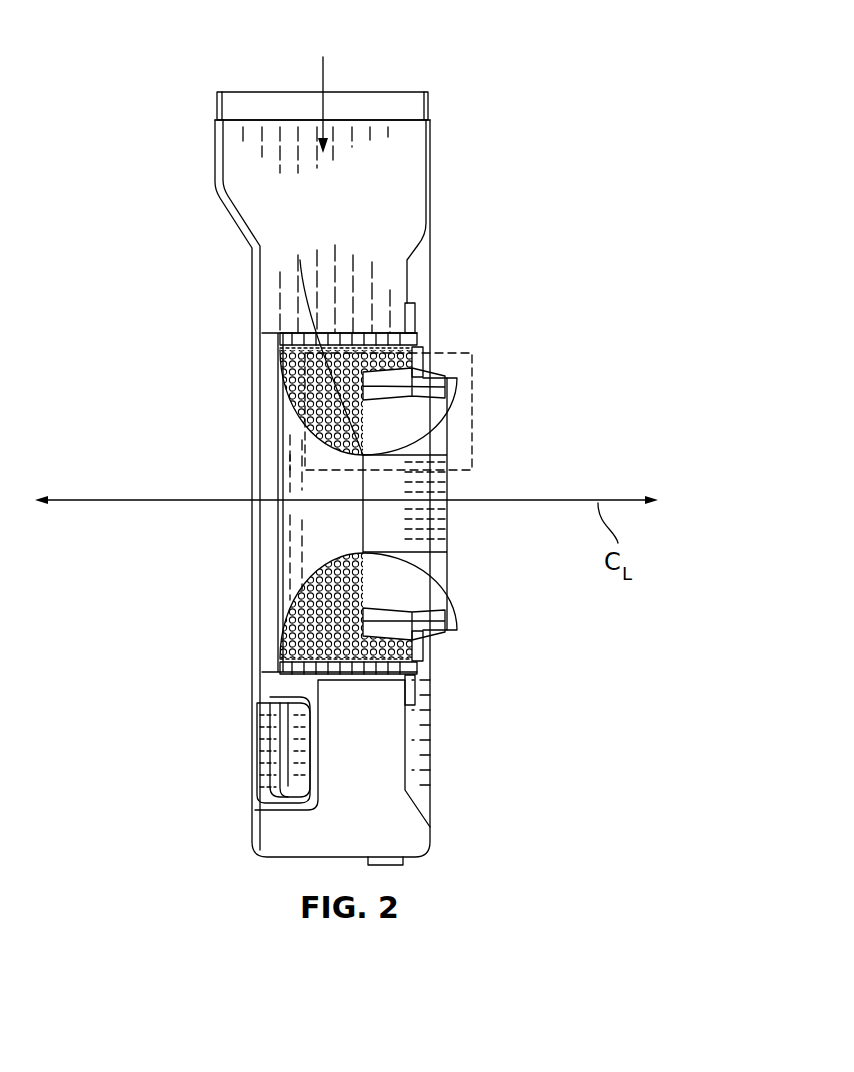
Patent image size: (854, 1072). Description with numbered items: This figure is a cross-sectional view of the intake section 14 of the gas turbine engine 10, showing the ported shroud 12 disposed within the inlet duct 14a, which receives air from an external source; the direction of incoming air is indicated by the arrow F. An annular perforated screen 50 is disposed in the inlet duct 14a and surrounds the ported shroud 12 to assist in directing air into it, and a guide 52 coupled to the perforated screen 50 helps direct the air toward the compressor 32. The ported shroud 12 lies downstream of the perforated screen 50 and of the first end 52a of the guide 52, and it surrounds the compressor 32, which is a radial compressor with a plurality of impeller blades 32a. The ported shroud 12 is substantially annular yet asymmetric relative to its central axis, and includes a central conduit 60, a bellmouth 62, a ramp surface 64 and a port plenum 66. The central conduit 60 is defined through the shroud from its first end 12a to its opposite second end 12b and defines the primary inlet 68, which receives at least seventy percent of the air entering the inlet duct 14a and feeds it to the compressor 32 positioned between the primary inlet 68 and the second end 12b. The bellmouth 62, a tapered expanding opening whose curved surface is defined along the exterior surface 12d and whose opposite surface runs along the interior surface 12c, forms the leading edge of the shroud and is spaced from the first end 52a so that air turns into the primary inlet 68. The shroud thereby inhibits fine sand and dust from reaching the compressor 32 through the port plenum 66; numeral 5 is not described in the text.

The gas turbine engine 10 is at (472, 55).
The intake section 14 is at (455, 136).
The inlet duct 14a is at (427, 223).
The fluid flow direction F is at (323, 70).
The primary inlet 68 is at (325, 345).
The perforated screen 50 is at (415, 336).
The port plenum 66 is at (410, 388).
The impeller blades 32a is at (438, 387).
The compressor 32 is at (468, 404).
The guide 52 is at (270, 370).
The first end 52a is at (278, 418).
The ported shroud 12 is at (460, 438).
The central conduit 60 is at (450, 458).
The hidden line region 5 is at (302, 458).
The second end 12b is at (447, 490).
The first end 12a is at (350, 553).
The interior surface 12c is at (415, 545).
The exterior surface 12d is at (450, 637).
The bellmouth 62 is at (330, 626).
The ramp surface 64 is at (404, 645).